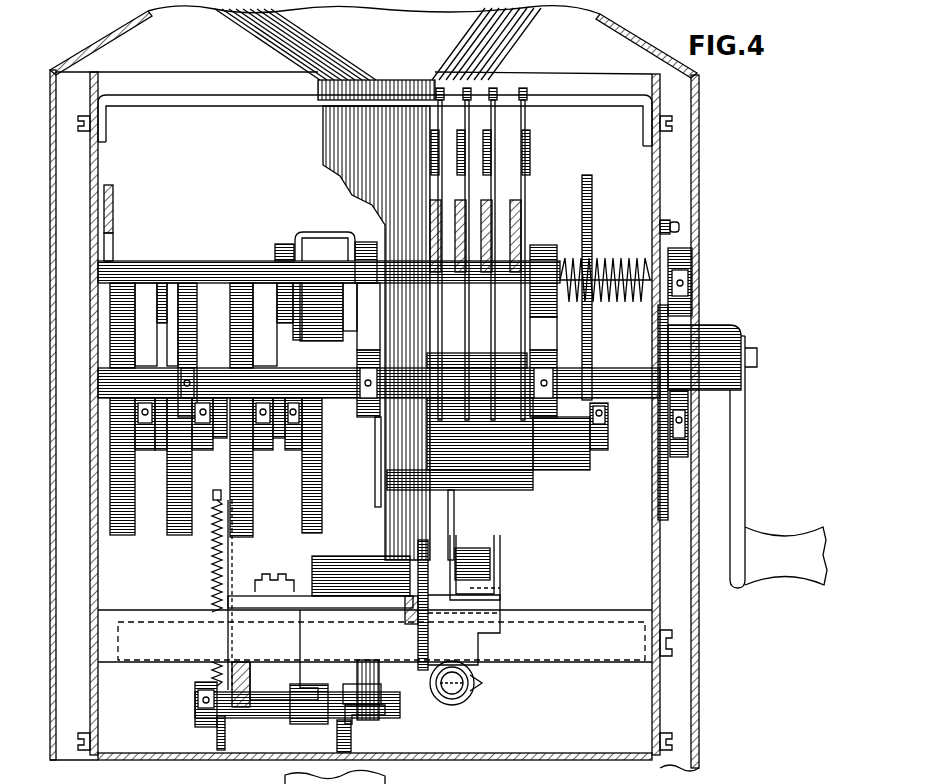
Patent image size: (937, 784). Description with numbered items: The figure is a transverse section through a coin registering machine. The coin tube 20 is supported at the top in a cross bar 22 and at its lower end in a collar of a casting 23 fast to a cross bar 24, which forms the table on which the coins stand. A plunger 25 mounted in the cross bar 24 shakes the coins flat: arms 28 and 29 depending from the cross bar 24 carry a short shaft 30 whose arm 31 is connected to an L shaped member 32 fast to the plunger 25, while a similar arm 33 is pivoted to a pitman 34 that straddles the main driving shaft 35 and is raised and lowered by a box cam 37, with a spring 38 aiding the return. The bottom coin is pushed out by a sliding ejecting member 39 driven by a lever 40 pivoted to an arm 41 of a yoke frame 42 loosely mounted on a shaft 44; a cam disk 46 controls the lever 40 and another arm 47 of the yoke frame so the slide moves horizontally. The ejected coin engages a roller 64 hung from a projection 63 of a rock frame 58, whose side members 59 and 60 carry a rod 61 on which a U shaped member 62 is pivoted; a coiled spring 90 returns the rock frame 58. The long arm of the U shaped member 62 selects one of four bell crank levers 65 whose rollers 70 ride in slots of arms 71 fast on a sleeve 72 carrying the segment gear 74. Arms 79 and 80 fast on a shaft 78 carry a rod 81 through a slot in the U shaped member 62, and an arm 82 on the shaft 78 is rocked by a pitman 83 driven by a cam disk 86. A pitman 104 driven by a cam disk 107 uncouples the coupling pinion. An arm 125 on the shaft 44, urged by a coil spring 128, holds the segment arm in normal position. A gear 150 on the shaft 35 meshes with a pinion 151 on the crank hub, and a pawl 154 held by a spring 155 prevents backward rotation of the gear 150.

The coin tube 20 is at (330, 130).
The cross bar 22 is at (270, 98).
The casting 23 is at (308, 590).
The cross bar 24 is at (552, 613).
The plunger 25 is at (381, 703).
The depending arm 28 is at (306, 684).
The depending arm 29 is at (243, 698).
The short shaft 30 is at (283, 723).
The arm 31 is at (340, 729).
The L shaped member 32 is at (352, 720).
The arm 33 is at (215, 729).
The pitman 34 is at (230, 580).
The main driving shaft 35 is at (632, 434).
The box cam 37 is at (246, 494).
The spring 38 is at (212, 580).
The sliding ejecting member 39 is at (302, 609).
The lever 40 is at (343, 330).
The arm 41 is at (368, 296).
The yoke frame 42 is at (320, 234).
The shaft 44 is at (200, 264).
The cam disk 46 is at (302, 344).
The arm 47 is at (293, 318).
The rock frame 58 is at (472, 652).
The side member 59 is at (497, 592).
The side member 60 is at (428, 630).
The rod 61 is at (465, 556).
The U shaped member 62 is at (455, 530).
The rearwardly extending projection 63 is at (475, 590).
The roller 64 is at (410, 620).
The bell crank levers 65 is at (492, 217).
The rollers 70 is at (440, 146).
The arms 71 is at (445, 85).
The sleeve 72 is at (500, 356).
The segment gear 74 is at (592, 232).
The shaft 78 is at (606, 380).
The arm 79 is at (530, 480).
The arm 80 is at (377, 505).
The rod 81 is at (508, 490).
The arm 82 is at (186, 343).
The pitman 83 is at (166, 323).
The cam disk 86 is at (176, 538).
The coiled spring 90 is at (466, 695).
The pitman 104 is at (110, 246).
The cam disk 107 is at (125, 537).
The arm 125 is at (528, 342).
The coil spring 128 is at (604, 260).
The gear 150 is at (658, 513).
The pinion 151 is at (664, 333).
The pawl 154 is at (662, 290).
The spring 155 is at (676, 226).